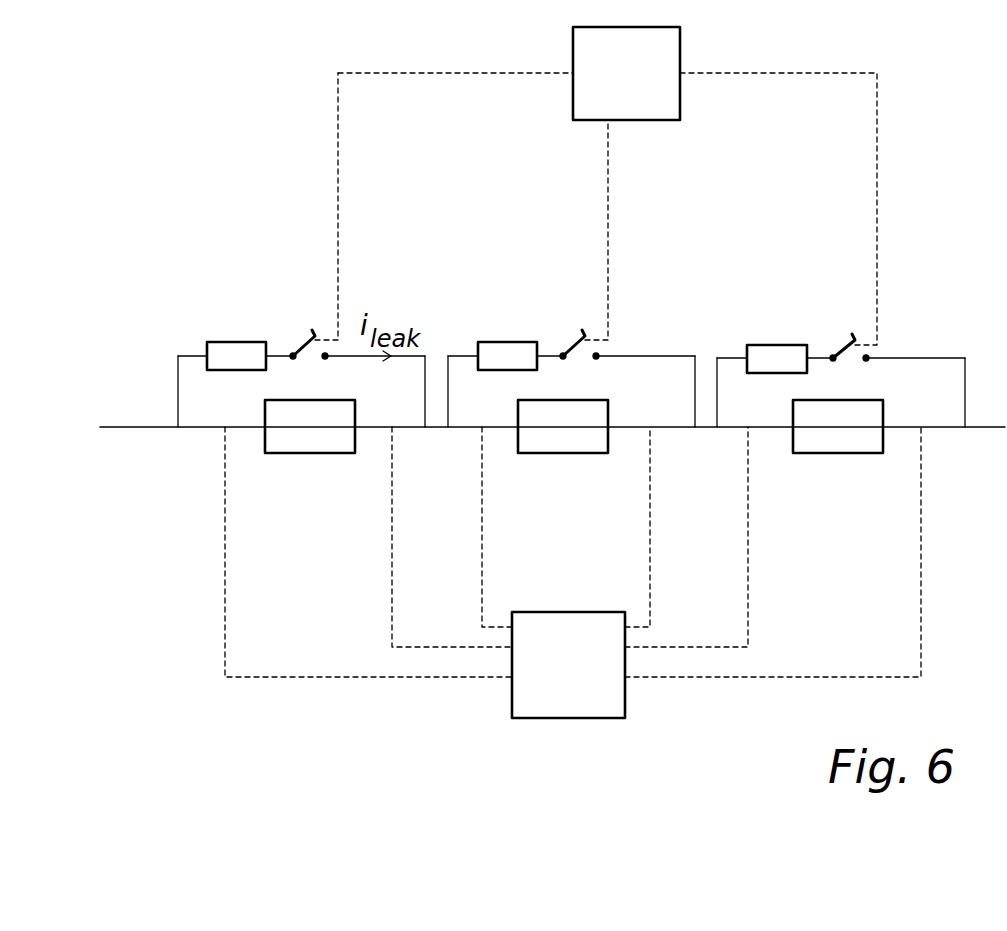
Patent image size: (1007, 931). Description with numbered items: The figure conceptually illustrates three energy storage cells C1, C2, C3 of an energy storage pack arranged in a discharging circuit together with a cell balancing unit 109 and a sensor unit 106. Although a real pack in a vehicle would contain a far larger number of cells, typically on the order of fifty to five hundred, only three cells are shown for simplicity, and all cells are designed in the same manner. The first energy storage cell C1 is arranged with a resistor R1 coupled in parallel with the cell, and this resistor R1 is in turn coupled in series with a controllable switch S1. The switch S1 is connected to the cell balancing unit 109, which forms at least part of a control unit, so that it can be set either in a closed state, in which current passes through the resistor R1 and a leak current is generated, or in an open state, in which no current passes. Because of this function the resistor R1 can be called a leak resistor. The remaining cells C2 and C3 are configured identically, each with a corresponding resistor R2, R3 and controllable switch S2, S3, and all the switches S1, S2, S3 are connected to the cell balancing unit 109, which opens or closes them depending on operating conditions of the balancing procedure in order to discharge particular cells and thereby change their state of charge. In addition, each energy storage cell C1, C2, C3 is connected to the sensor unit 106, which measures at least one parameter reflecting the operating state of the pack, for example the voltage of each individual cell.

The resistor R1 is at (238, 342).
The resistor R2 is at (508, 342).
The resistor R3 is at (775, 345).
The controllable switch S1 is at (313, 333).
The controllable switch S2 is at (583, 333).
The controllable switch S3 is at (853, 333).
The first energy storage cell C1 is at (306, 453).
The energy storage cell C2 is at (565, 453).
The energy storage cell C3 is at (838, 453).
The cell balancing unit 109 is at (645, 122).
The sensor unit 106 is at (574, 720).